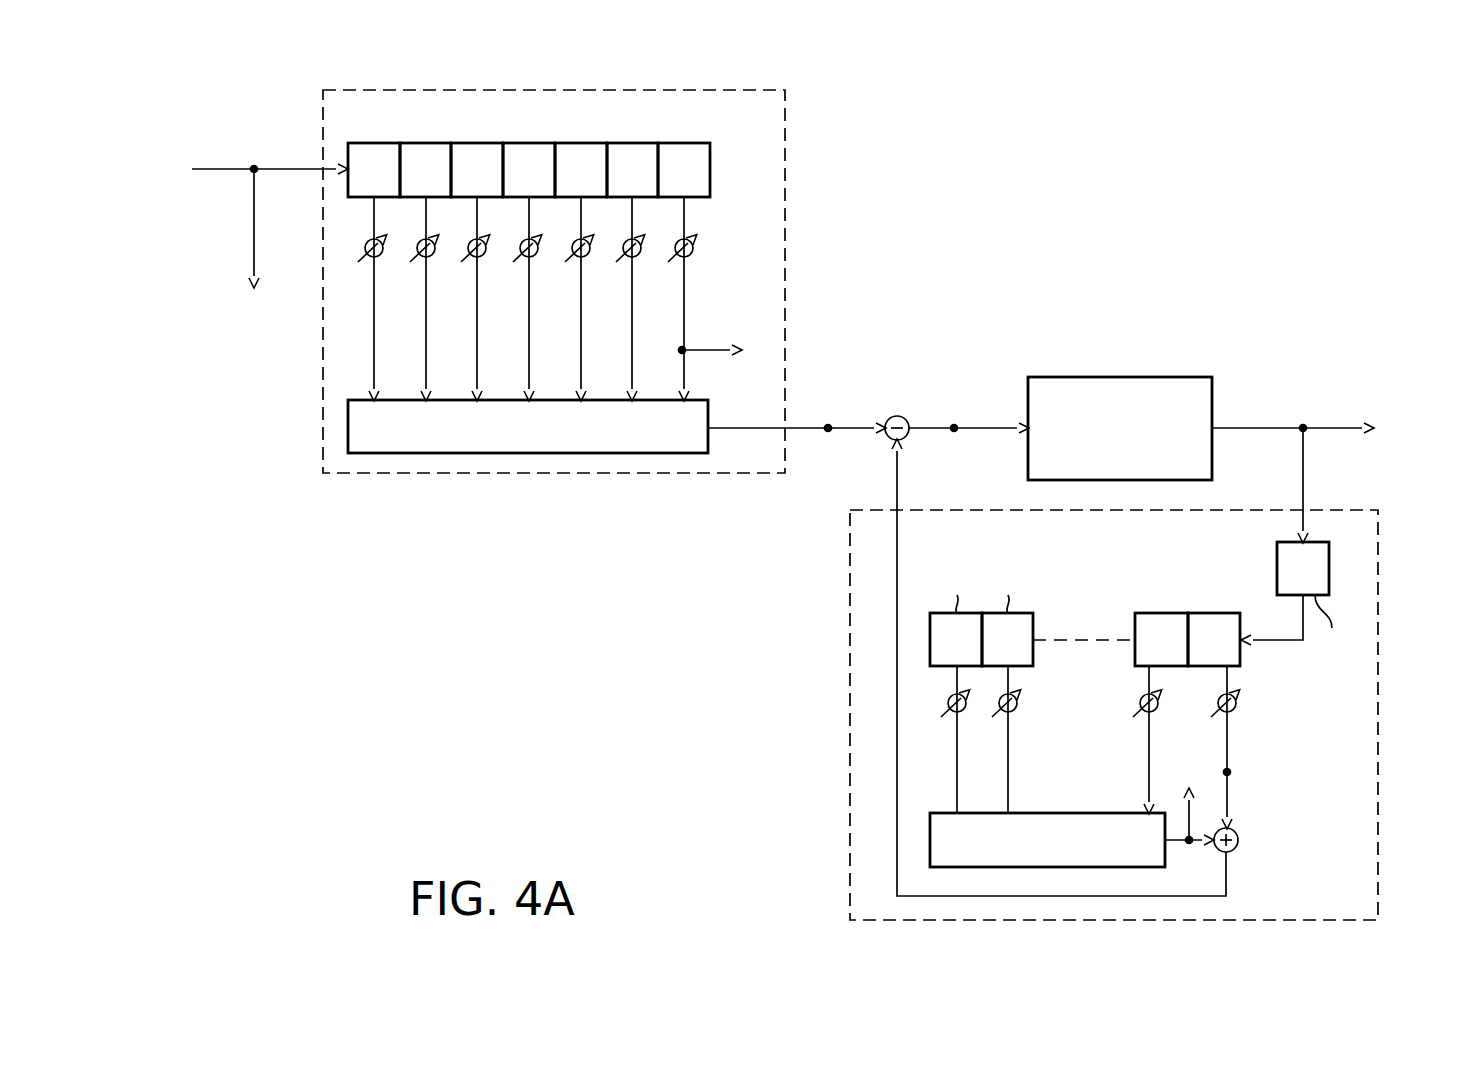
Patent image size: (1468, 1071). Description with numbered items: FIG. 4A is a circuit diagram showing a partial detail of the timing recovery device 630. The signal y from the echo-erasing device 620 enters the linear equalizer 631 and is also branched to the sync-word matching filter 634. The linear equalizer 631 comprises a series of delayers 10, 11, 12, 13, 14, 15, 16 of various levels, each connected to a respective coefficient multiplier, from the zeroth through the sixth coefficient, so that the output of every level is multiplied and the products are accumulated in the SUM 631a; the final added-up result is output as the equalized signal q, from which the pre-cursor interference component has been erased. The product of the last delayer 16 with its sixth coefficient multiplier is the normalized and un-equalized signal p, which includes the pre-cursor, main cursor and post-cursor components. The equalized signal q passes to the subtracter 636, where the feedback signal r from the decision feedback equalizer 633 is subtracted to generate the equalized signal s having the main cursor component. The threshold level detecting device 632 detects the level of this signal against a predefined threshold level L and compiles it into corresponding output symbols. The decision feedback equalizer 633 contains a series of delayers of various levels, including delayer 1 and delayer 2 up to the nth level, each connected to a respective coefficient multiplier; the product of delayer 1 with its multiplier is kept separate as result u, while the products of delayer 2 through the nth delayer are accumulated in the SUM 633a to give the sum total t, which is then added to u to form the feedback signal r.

The timing recovery device 630 is at (442, 739).
The echo-erasing device 620 is at (232, 156).
The sync-word matching filter 634 is at (252, 255).
The linear equalizer 631 is at (786, 140).
The SUM 631a is at (394, 453).
The subtracter 636 is at (897, 416).
The threshold level detecting device 632 is at (1180, 377).
The decision feedback equalizer 633 is at (1379, 577).
The SUM 633a is at (930, 838).
The delayer 10 is at (374, 143).
The delayer 11 is at (426, 143).
The delayer 12 is at (477, 143).
The delayer 13 is at (529, 143).
The delayer 14 is at (581, 143).
The delayer 15 is at (632, 143).
The delayer 16 is at (684, 143).
The delayer 1 is at (1214, 613).
The delayer 2 is at (1162, 613).